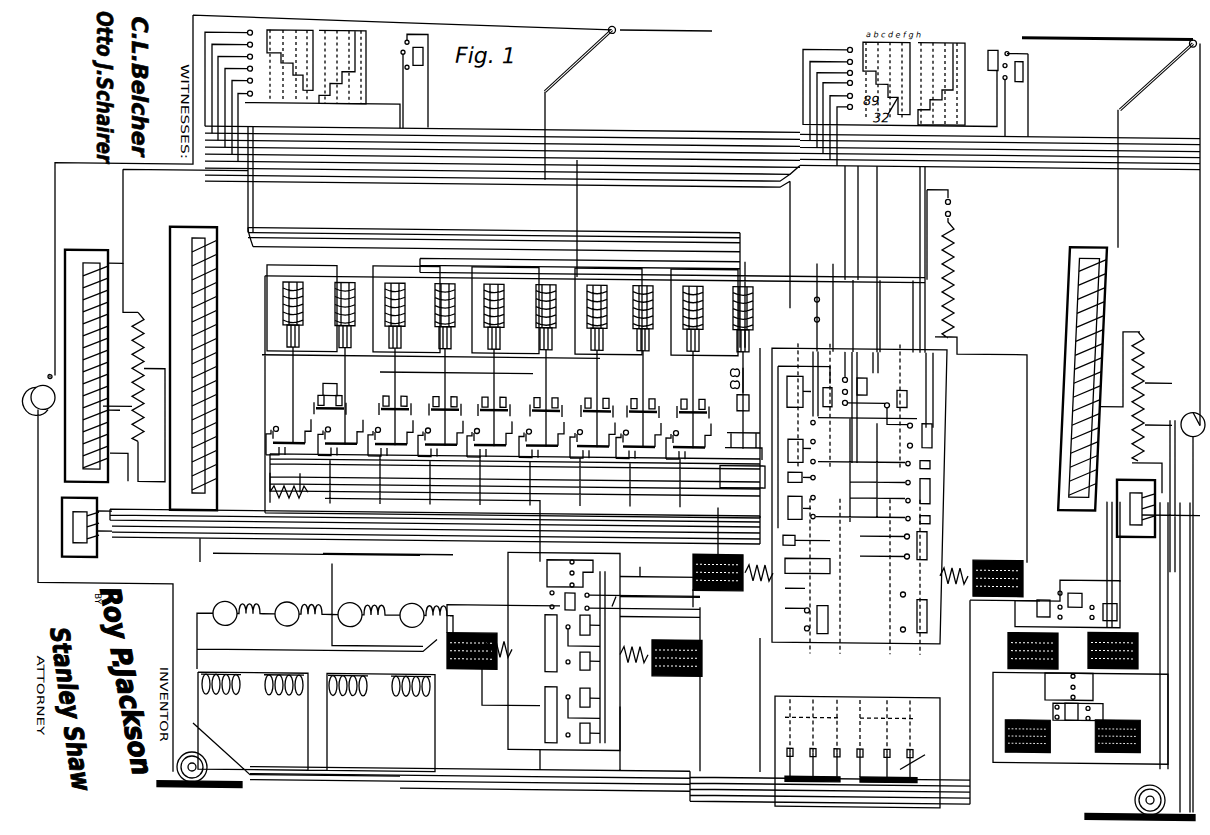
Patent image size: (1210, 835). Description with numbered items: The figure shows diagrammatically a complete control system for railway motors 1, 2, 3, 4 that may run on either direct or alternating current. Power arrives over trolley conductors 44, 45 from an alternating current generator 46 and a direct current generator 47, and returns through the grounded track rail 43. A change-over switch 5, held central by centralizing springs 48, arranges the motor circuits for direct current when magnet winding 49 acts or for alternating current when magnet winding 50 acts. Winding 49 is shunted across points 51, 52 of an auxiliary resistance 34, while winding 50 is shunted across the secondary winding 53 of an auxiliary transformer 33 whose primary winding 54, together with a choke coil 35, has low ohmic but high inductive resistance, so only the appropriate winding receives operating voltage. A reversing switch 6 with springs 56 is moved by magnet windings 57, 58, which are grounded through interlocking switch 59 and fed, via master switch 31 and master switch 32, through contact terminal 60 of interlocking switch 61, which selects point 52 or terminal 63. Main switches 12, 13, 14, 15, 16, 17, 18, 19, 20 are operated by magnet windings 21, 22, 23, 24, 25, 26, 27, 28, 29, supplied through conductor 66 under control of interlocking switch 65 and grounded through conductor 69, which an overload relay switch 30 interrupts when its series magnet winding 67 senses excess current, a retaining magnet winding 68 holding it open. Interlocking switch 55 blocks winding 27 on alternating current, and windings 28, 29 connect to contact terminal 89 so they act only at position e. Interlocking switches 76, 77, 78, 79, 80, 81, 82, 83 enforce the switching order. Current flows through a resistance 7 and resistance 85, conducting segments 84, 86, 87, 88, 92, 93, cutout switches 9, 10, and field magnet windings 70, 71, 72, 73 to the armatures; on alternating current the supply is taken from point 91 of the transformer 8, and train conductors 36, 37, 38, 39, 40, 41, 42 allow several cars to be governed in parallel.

The motor 1 is at (317, 628).
The motor 2 is at (297, 595).
The motor 3 is at (377, 616).
The motor 4 is at (426, 616).
The change-over switch 5 is at (950, 485).
The reversing switch 6 is at (510, 686).
The resistance 7 is at (957, 270).
The transformer 8 is at (195, 369).
The cutout switch 9 is at (786, 752).
The cutout switch 10 is at (918, 755).
The main switch 12 is at (289, 437).
The main switch 13 is at (341, 437).
The main switch 14 is at (391, 438).
The main switch 15 is at (441, 438).
The main switch 16 is at (490, 439).
The main switch 17 is at (542, 439).
The main switch 18 is at (593, 440).
The main switch 19 is at (639, 440).
The main switch 20 is at (689, 441).
The magnet winding 21 is at (303, 296).
The magnet winding 22 is at (354, 364).
The magnet winding 23 is at (406, 356).
The magnet winding 24 is at (455, 365).
The magnet winding 25 is at (505, 357).
The magnet winding 26 is at (555, 366).
The magnet winding 27 is at (608, 358).
The magnet winding 28 is at (653, 367).
The magnet winding 29 is at (704, 359).
The overload relay switch 30 is at (743, 446).
The master switch 31 is at (414, 81).
The master switch 32 is at (300, 80).
The auxiliary transformer 33 is at (104, 282).
The auxiliary resistance 34 is at (147, 386).
The choke coil 35 is at (62, 535).
The train conductor 36 is at (632, 124).
The train conductor 37 is at (664, 131).
The train conductor 38 is at (692, 138).
The train conductor 39 is at (720, 145).
The train conductor 40 is at (748, 152).
The train conductor 41 is at (772, 159).
The train conductor 42 is at (795, 166).
The track rail 43 is at (199, 770).
The trolley conductor 44 is at (608, 152).
The trolley conductor 45 is at (1109, 74).
The alternating current generator 46 is at (98, 573).
The direct current generator 47 is at (1190, 400).
The centralizing springs 48 is at (856, 592).
The magnet winding 49 is at (718, 558).
The magnet winding 50 is at (1005, 588).
The point in auxiliary resistance 51 is at (134, 372).
The point in auxiliary resistance 52 is at (151, 415).
The secondary winding 53 is at (120, 466).
The primary winding 54 is at (96, 357).
The interlocking switch 55 is at (876, 386).
The springs 56 is at (566, 640).
The magnet winding 57 is at (503, 655).
The magnet winding 58 is at (677, 662).
The interlocking switch 59 is at (546, 570).
The contact terminal 60 is at (868, 418).
The interlocking switch 61 is at (850, 372).
The terminal 63 is at (118, 410).
The interlocking switch 65 is at (549, 601).
The conductor 66 is at (625, 600).
The magnet winding 67 is at (754, 368).
The retaining magnet winding 68 is at (749, 386).
The conductor 69 is at (742, 477).
The field magnet winding 70 is at (221, 692).
The field magnet winding 71 is at (284, 693).
The field magnet winding 72 is at (348, 693).
The field magnet winding 73 is at (411, 694).
The interlocking switch 76 is at (330, 394).
The interlocking switch 77 is at (398, 399).
The interlocking switch 78 is at (449, 398).
The interlocking switch 79 is at (497, 398).
The interlocking switch 80 is at (547, 395).
The interlocking switch 81 is at (599, 401).
The interlocking switch 82 is at (645, 403).
The interlocking switch 83 is at (695, 403).
The conducting segment 84 is at (915, 530).
The resistance 85 is at (277, 487).
The conducting segment 86 is at (545, 634).
The conducting segment 87 is at (930, 612).
The conducting segment 88 is at (545, 706).
The contact terminal 89 is at (238, 96).
The point in transformer winding 91 is at (177, 318).
The conducting segment 92 is at (814, 556).
The conducting segment 93 is at (802, 596).